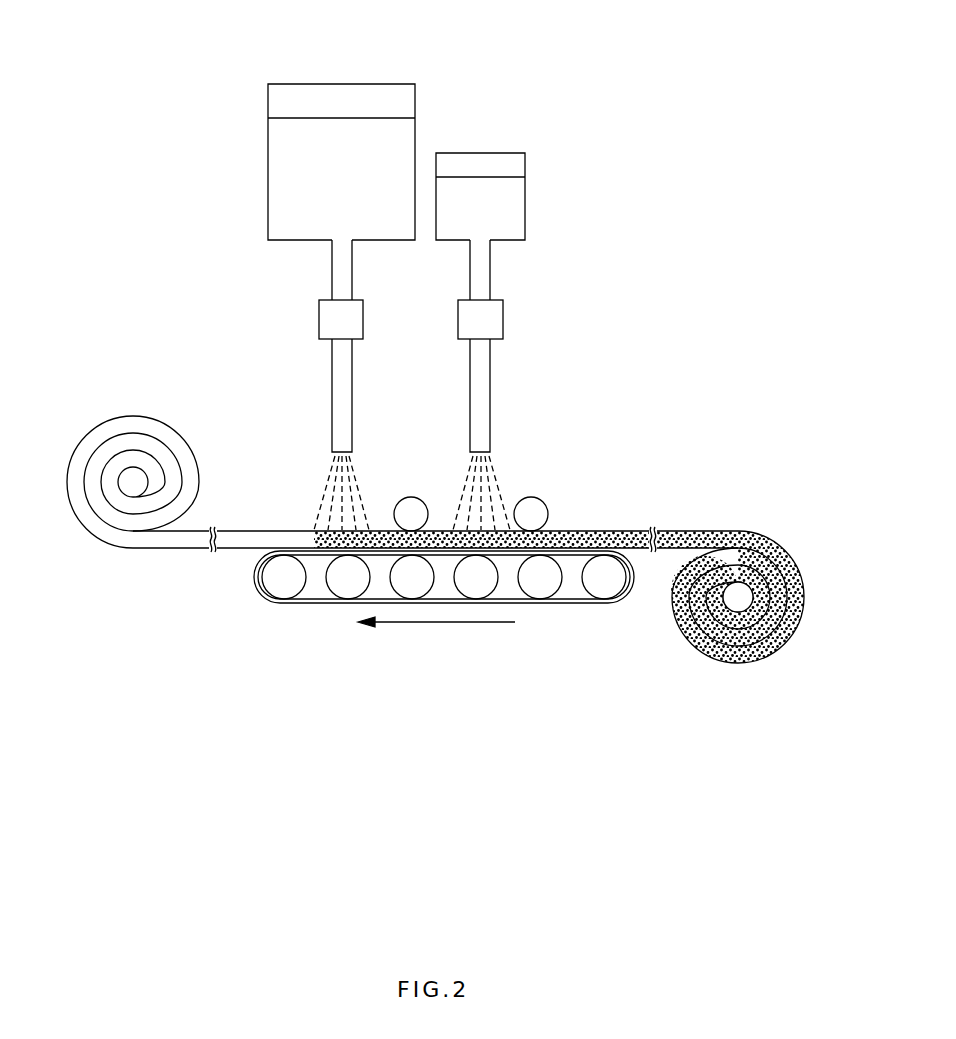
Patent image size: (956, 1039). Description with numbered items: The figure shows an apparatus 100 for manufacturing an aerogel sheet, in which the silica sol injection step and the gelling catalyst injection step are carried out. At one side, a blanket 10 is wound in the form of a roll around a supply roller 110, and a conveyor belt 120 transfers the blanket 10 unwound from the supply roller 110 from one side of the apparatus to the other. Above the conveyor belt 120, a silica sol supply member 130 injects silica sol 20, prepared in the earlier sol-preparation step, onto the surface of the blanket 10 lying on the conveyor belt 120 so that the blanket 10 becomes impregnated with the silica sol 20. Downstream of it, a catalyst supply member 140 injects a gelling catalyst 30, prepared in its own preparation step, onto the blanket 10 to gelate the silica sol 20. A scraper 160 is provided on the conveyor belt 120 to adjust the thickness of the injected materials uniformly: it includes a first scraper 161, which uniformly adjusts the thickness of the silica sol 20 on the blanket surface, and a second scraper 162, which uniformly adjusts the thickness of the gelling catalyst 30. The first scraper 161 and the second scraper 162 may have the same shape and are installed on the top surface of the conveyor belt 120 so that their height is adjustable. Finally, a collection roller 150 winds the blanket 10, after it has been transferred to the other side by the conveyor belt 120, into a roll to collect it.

The apparatus for manufacturing the aerogel sheet 100 is at (612, 90).
The blanket 10 is at (240, 530).
The silica sol 20 is at (270, 162).
The gelling catalyst 30 is at (518, 190).
The supply roller 110 is at (133, 480).
The conveyor belt 120 is at (262, 598).
The silica sol supply member 130 is at (340, 83).
The catalyst supply member 140 is at (478, 152).
The collection roller 150 is at (738, 595).
The scraper 160 is at (517, 421).
The first scraper 161 is at (423, 498).
The second scraper 162 is at (538, 498).